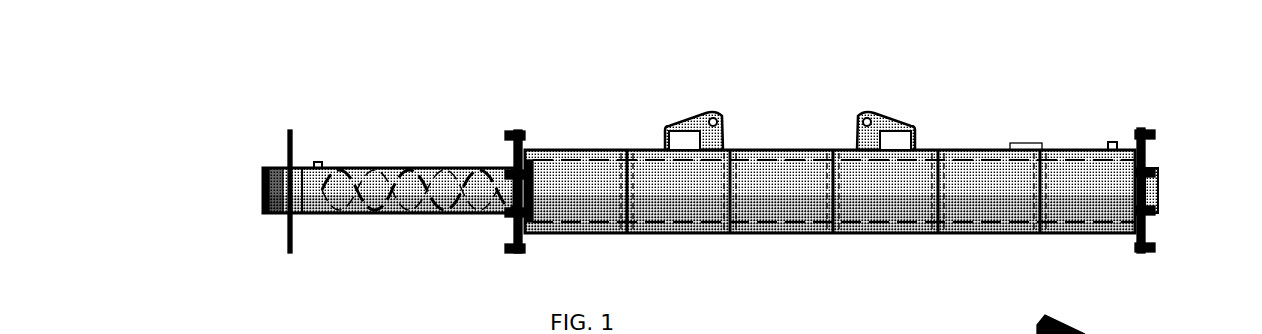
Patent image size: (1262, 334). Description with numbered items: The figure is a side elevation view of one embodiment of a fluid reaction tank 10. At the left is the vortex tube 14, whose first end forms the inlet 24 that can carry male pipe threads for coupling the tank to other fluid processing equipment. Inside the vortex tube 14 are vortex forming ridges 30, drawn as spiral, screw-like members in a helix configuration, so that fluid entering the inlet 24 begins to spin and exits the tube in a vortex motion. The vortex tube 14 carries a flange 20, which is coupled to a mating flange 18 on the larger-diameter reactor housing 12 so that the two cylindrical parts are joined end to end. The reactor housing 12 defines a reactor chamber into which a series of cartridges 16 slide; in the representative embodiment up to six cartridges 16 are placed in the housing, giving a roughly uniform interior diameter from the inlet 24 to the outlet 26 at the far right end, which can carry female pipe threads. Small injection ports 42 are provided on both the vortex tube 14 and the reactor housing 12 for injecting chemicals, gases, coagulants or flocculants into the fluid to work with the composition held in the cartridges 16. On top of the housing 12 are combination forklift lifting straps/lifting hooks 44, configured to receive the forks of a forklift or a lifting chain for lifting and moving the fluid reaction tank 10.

The fluid reaction tank 10 is at (637, 55).
The reactor housing 12 is at (960, 148).
The vortex tube 14 is at (412, 168).
The cartridges 16 is at (563, 203).
The flange 18 is at (528, 132).
The flange 20 is at (297, 118).
The inlet 24 is at (266, 213).
The outlet 26 is at (1170, 222).
The vortex forming ridges 30 is at (462, 195).
The injection ports 42 is at (323, 160).
The combination forklift lifting straps/lifting hooks 44 is at (893, 124).